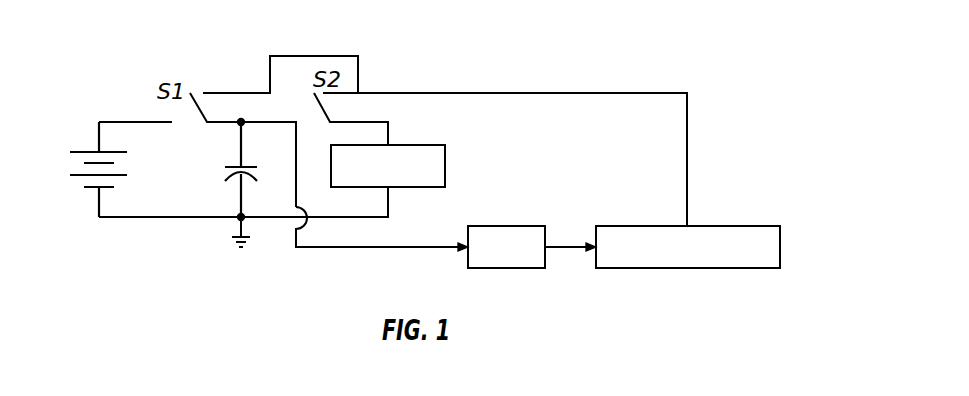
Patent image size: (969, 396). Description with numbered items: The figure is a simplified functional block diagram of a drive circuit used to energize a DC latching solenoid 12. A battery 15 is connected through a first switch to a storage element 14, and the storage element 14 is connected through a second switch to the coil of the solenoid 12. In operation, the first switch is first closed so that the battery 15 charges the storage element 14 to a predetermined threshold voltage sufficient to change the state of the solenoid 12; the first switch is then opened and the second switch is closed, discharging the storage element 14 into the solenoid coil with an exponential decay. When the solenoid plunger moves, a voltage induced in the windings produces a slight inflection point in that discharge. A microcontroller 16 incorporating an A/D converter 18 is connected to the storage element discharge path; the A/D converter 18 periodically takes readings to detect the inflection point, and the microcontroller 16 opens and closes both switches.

The DC latching solenoid 12 is at (445, 166).
The storage element 14 is at (237, 168).
The battery 15 is at (120, 177).
The microcontroller 16 is at (745, 226).
The A/D converter 18 is at (505, 226).